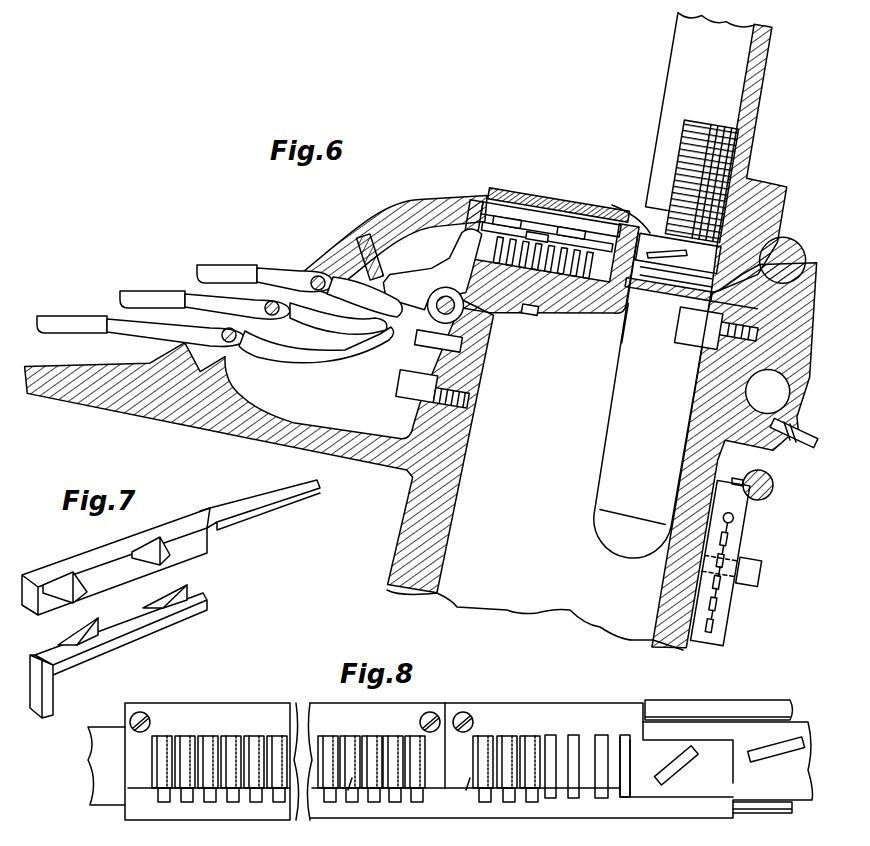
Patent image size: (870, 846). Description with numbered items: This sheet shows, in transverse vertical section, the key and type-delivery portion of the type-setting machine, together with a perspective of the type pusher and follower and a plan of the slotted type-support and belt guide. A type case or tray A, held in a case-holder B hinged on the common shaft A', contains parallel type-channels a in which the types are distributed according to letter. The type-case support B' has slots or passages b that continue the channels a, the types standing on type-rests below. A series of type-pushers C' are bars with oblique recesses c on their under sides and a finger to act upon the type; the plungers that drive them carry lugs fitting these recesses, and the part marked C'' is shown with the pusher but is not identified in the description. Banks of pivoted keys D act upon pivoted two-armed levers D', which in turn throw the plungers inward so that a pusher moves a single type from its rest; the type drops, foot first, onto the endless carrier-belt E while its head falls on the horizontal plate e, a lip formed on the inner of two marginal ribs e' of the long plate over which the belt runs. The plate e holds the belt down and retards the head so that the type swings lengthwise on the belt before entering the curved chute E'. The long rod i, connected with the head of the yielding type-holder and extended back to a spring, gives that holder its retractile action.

In FIG. 6, the type case A is at (700, 116).
In FIG. 6, the type-channels a is at (701, 173).
In FIG. 6, the case-holder B is at (760, 163).
In FIG. 6, the common shaft A' is at (782, 250).
In FIG. 6, the endless carrier-belt E is at (652, 398).
In FIG. 8, the endless carrier-belt E is at (106, 766).
In FIG. 6, the curved chute E' is at (632, 511).
In FIG. 6, the horizontal plate e is at (678, 256).
In FIG. 8, the horizontal plate e is at (712, 763).
In FIG. 6, the marginal ribs e' is at (639, 322).
In FIG. 8, the marginal ribs e' is at (719, 767).
In FIG. 6, the type-pusher C' is at (559, 204).
In FIG. 7, the type-pusher C' is at (260, 504).
In FIG. 6, the bar C'' is at (549, 227).
In FIG. 7, the bar C'' is at (116, 561).
In FIG. 6, the oblique recesses c is at (540, 229).
In FIG. 7, the oblique recesses c is at (118, 570).
In FIG. 6, the type-case support B' is at (623, 209).
In FIG. 8, the type-case support B' is at (469, 761).
In FIG. 6, the pivoted keys D is at (219, 306).
In FIG. 6, the two-armed levers D' is at (430, 271).
In FIG. 6, the rod i is at (773, 490).
In FIG. 8, the slots or passages b is at (182, 737).